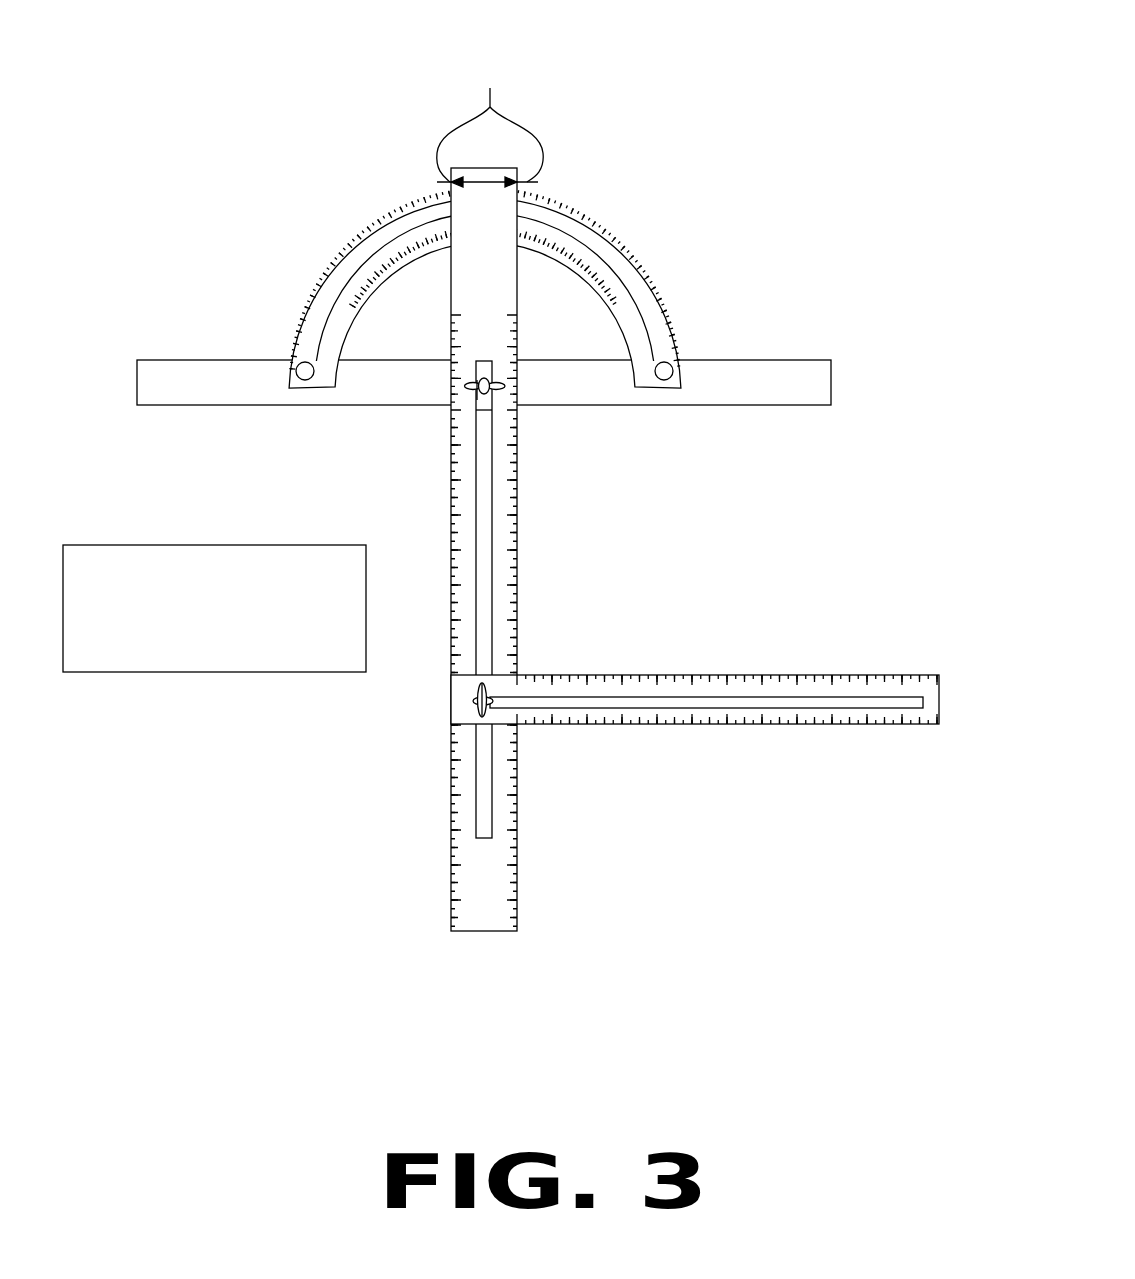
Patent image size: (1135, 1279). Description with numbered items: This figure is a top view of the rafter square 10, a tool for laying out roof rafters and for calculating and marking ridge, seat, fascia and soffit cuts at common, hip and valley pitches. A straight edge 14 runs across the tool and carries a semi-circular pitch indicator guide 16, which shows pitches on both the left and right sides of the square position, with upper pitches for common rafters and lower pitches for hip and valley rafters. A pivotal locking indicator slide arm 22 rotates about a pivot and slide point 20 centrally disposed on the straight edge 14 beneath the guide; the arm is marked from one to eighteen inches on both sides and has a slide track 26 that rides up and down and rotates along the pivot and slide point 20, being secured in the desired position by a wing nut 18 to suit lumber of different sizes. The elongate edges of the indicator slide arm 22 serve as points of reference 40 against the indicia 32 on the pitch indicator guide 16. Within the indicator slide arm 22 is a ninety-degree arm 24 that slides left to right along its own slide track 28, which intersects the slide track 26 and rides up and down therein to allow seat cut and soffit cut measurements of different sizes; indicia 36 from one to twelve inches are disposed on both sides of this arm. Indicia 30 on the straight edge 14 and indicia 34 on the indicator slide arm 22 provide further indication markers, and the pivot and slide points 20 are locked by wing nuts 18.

The rafter square 10 is at (738, 126).
The straight edge 14 is at (787, 362).
The pitch indicator guide 16 is at (383, 220).
The wing nut 18 is at (500, 388).
The pivot and slide point 20 is at (476, 405).
The indicator slide arm 22 is at (487, 932).
The 90-degree arm 24 is at (855, 675).
The slide track of indicator slide arm 26 is at (482, 795).
The slide track of 90-degree arm 28 is at (563, 708).
The indicia of straight edge 30 is at (190, 390).
The indicia of pitch indicator guide 32 is at (604, 247).
The indicia of indicator slide arm 34 is at (463, 864).
The indicia of 90-degree slide arm 36 is at (832, 718).
The point of reference 40 is at (490, 114).